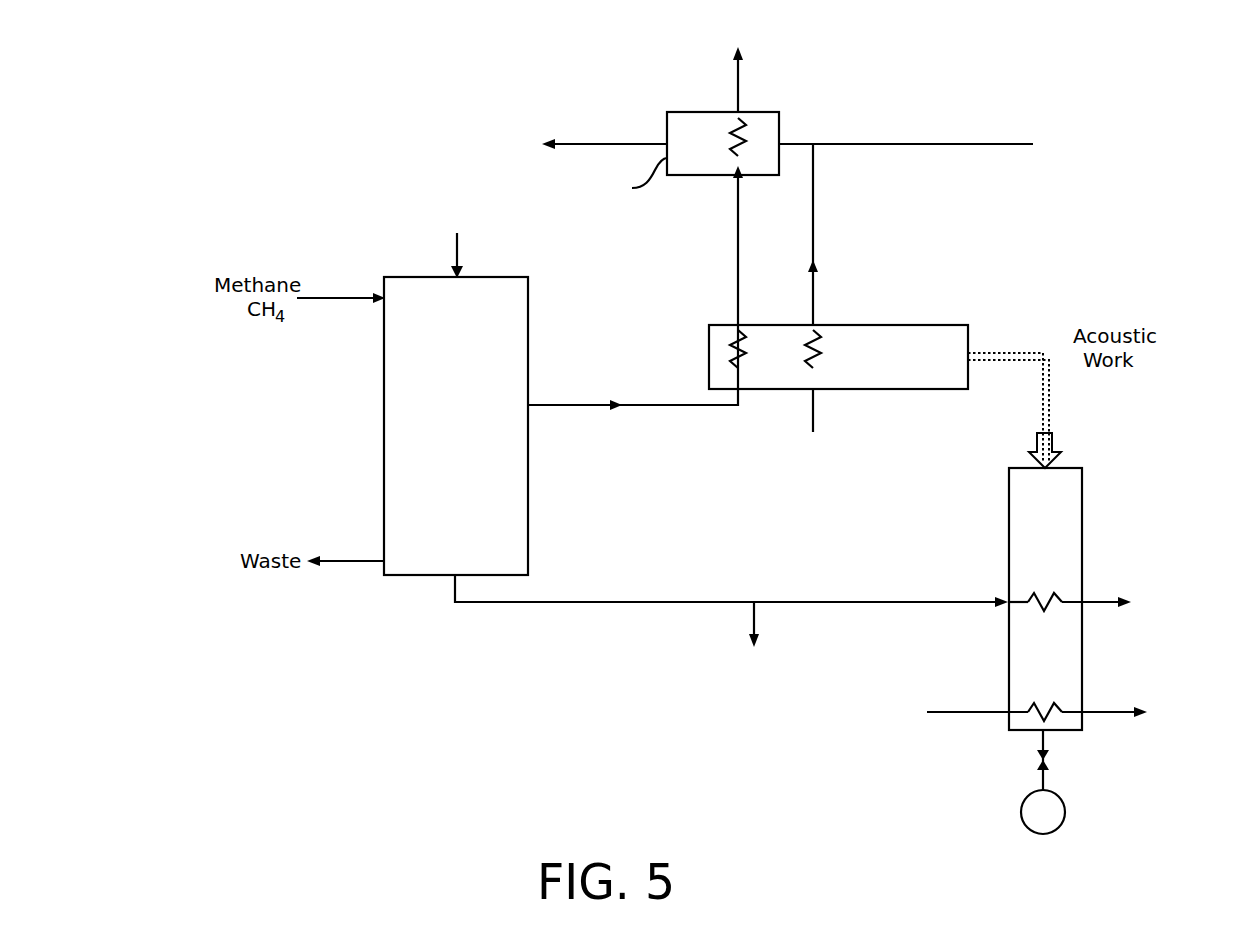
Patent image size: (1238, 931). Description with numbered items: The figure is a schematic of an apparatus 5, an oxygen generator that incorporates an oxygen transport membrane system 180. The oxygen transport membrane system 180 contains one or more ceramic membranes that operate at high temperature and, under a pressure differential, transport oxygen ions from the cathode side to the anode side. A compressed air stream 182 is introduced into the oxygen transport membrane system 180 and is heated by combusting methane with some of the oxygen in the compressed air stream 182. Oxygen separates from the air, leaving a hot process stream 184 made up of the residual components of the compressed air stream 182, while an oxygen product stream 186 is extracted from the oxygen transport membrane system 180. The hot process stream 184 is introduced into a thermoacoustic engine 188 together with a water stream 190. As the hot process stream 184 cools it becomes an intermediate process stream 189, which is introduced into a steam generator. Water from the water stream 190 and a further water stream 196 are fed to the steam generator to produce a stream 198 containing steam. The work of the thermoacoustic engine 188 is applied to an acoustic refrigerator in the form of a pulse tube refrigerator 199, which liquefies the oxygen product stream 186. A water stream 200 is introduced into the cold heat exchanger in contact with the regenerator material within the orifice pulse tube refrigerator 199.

The apparatus 5 is at (258, 176).
The oxygen transport membrane system 180 is at (384, 445).
The compressed air stream 182 is at (459, 240).
The hot process stream 184 is at (668, 405).
The oxygen product stream 186 is at (585, 602).
The thermoacoustic engine 188 is at (779, 112).
The intermediate process stream 189 is at (738, 243).
The water stream 190 is at (813, 407).
The water stream 196 is at (895, 144).
The stream containing steam 198 is at (738, 85).
The pulse tube refrigerator 199 is at (1082, 522).
The water stream 200 is at (947, 712).